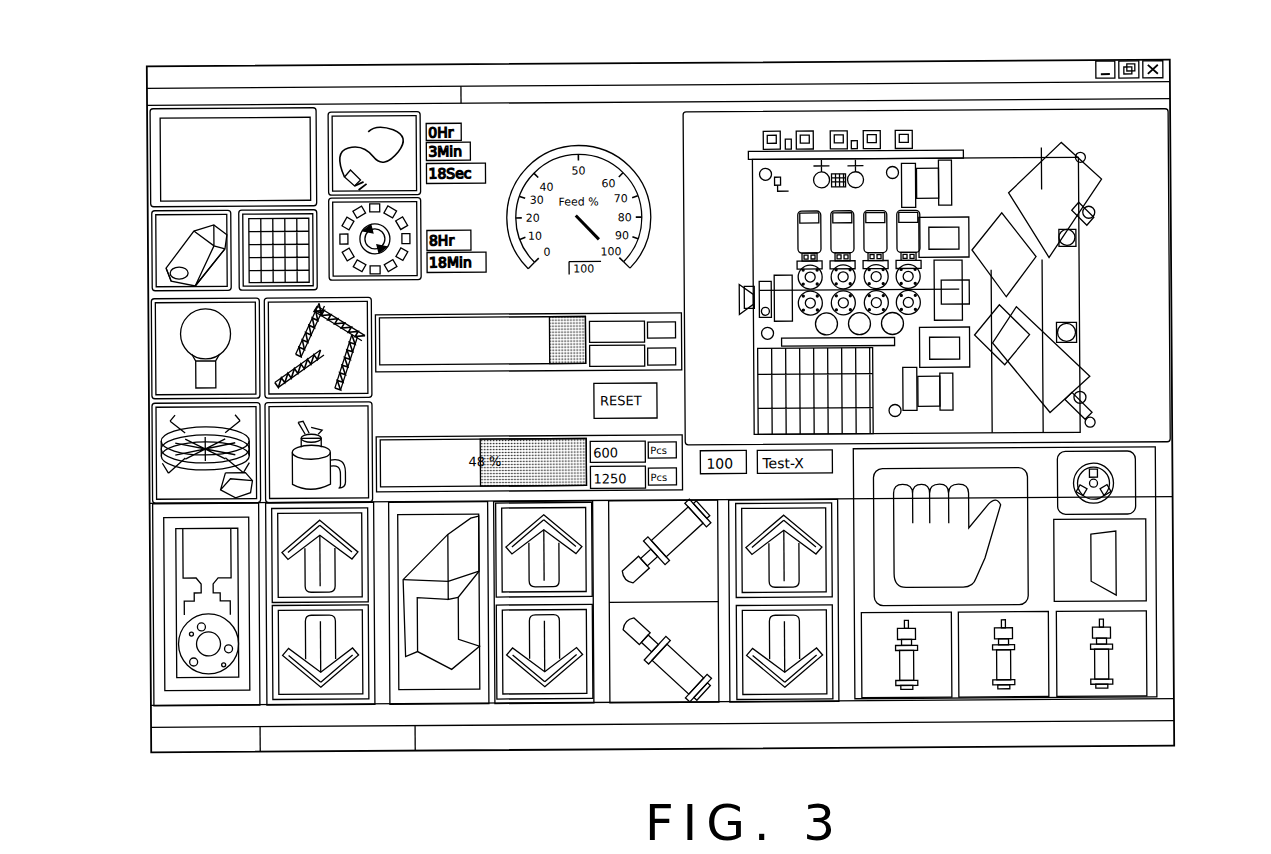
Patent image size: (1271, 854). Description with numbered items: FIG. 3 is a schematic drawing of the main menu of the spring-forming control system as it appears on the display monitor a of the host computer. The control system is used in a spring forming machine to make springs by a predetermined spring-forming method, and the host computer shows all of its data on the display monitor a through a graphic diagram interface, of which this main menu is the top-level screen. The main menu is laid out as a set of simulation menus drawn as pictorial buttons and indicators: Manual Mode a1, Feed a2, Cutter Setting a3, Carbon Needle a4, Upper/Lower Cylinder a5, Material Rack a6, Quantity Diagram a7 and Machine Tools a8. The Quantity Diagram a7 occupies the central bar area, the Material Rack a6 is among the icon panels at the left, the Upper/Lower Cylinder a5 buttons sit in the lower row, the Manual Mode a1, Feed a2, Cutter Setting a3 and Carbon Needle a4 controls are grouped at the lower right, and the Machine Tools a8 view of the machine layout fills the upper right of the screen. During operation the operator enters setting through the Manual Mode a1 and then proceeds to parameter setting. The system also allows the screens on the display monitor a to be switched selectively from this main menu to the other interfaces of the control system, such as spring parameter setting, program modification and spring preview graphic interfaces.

The display monitor a is at (789, 57).
The Manual Mode a1 is at (985, 594).
The Feed a2 is at (1120, 487).
The Cutter Setting a3 is at (1137, 571).
The Carbon Needle a4 is at (1100, 661).
The Upper/Lower Cylinder a5 is at (655, 576).
The Material Rack a6 is at (160, 469).
The Quantity Diagram a7 is at (440, 356).
The Machine Tools a8 is at (1075, 232).